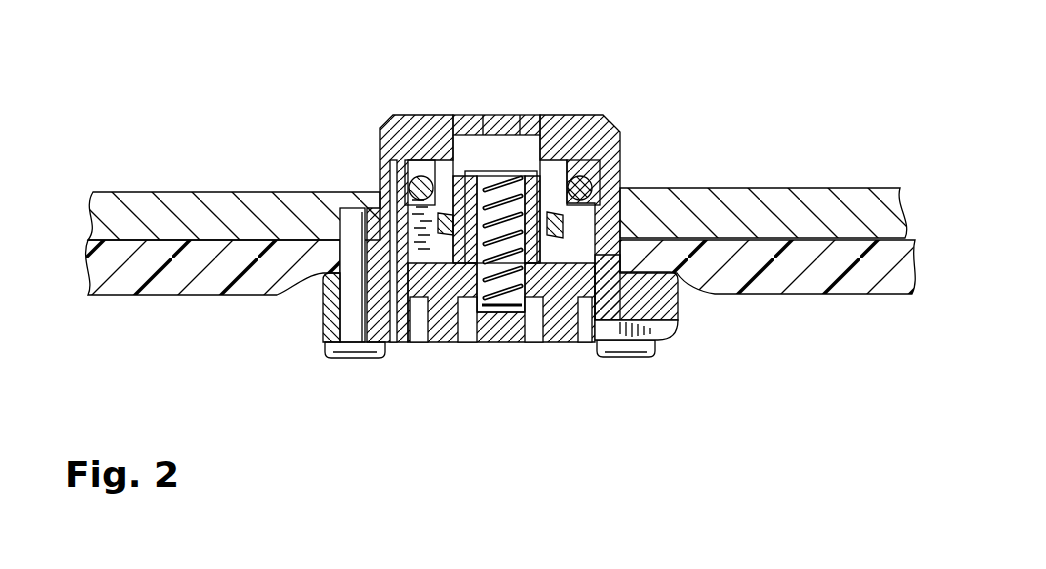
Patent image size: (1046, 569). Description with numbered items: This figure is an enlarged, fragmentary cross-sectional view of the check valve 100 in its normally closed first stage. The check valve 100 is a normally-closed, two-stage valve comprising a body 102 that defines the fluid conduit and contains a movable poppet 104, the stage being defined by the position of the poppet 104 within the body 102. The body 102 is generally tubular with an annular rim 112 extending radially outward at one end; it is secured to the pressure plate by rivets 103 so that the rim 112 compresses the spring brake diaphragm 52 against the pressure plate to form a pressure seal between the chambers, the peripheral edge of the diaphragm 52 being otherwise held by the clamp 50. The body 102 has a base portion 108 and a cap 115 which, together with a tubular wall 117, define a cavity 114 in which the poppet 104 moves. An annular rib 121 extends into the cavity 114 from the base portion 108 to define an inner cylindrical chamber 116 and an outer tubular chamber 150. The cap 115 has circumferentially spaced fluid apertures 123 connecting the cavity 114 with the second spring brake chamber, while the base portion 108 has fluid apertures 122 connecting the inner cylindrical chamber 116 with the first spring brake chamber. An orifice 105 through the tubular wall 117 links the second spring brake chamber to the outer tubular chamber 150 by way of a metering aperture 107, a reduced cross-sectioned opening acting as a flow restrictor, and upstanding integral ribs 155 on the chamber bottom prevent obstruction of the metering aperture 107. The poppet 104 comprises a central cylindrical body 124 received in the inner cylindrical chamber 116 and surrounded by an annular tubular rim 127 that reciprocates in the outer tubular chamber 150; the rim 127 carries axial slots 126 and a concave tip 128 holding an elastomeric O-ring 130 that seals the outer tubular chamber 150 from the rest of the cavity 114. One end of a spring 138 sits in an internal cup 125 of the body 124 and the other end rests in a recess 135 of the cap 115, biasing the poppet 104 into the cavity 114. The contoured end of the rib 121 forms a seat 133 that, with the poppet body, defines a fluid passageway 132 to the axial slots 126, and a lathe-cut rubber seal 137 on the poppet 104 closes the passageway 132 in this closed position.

The check valve 100 is at (236, 88).
The clamp 50 is at (243, 205).
The spring brake diaphragm 52 is at (183, 290).
The valve body 102 is at (323, 322).
The rivets 103 is at (348, 358).
The poppet 104 is at (472, 135).
The orifice 105 is at (403, 165).
The metering aperture 107 is at (382, 132).
The base portion 108 is at (393, 115).
The annular rim 112 is at (672, 308).
The cavity 114 is at (540, 330).
The cap 115 is at (512, 330).
The inner cylindrical chamber 116 is at (494, 154).
The tubular wall 117 is at (352, 325).
The annular rib 121 is at (558, 155).
The fluid apertures 122 is at (460, 125).
The fluid apertures 123 is at (557, 264).
The central cylindrical body 124 is at (551, 278).
The internal cup 125 is at (585, 140).
The axial slots 126 is at (415, 230).
The annular tubular rim 127 is at (623, 240).
The concave tip 128 is at (410, 184).
The O-ring 130 is at (600, 192).
The fluid passageway 132 is at (541, 178).
The seat 133 is at (420, 320).
The recess 135 is at (498, 314).
The seal 137 is at (455, 245).
The spring 138 is at (488, 300).
The outer tubular chamber 150 is at (610, 165).
The ribs 155 is at (620, 132).